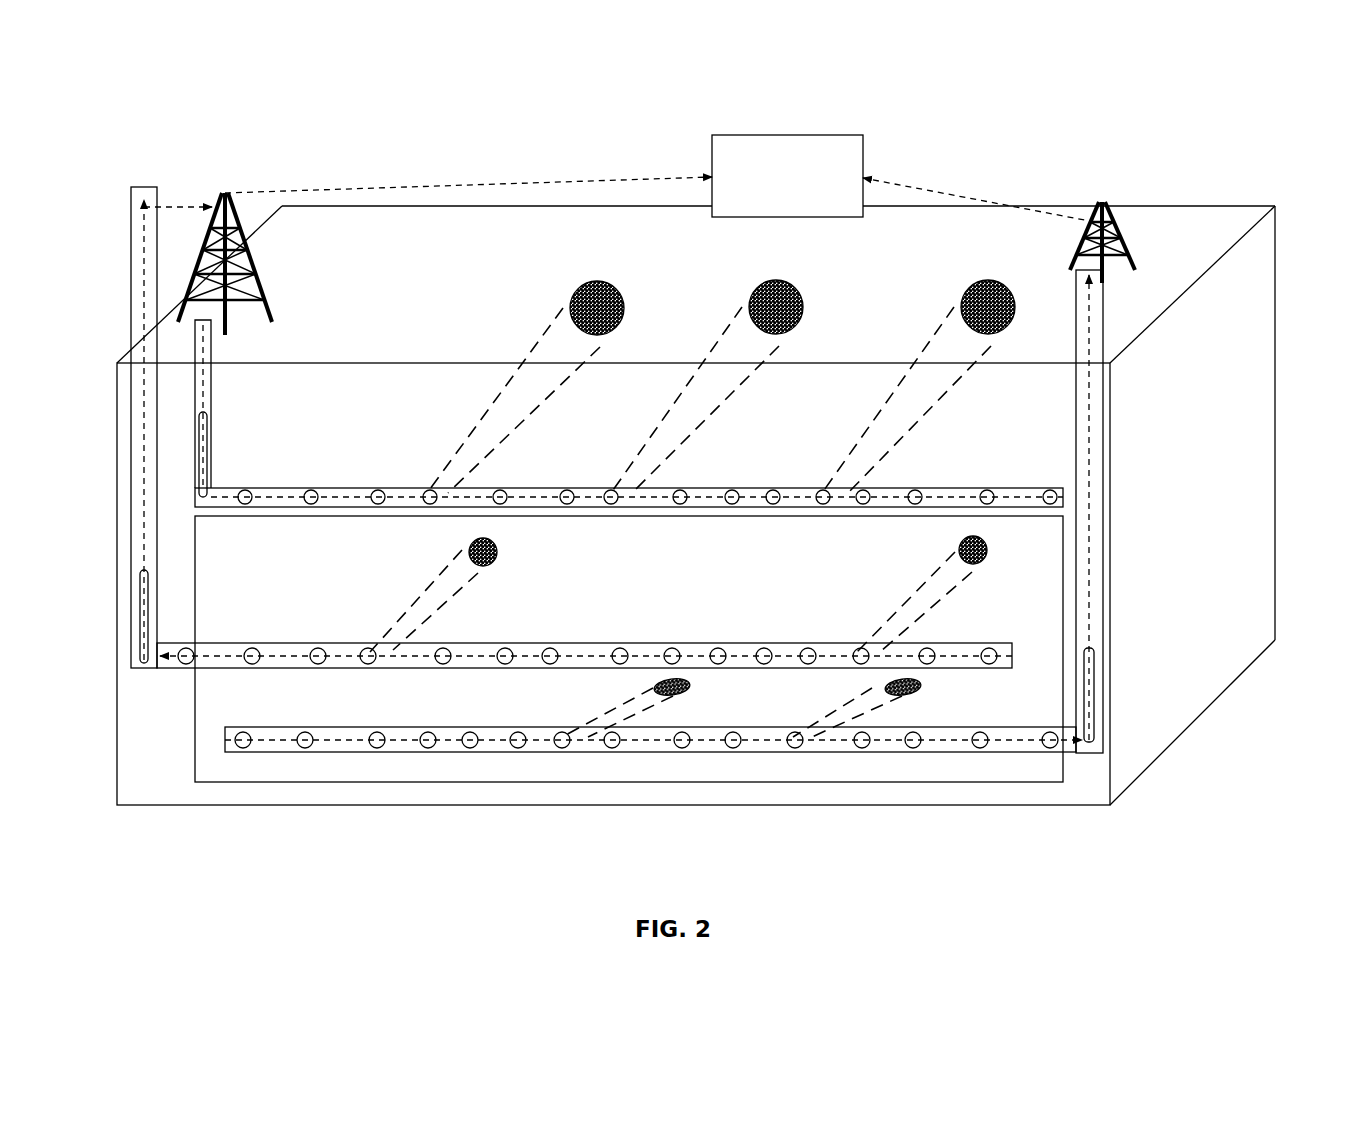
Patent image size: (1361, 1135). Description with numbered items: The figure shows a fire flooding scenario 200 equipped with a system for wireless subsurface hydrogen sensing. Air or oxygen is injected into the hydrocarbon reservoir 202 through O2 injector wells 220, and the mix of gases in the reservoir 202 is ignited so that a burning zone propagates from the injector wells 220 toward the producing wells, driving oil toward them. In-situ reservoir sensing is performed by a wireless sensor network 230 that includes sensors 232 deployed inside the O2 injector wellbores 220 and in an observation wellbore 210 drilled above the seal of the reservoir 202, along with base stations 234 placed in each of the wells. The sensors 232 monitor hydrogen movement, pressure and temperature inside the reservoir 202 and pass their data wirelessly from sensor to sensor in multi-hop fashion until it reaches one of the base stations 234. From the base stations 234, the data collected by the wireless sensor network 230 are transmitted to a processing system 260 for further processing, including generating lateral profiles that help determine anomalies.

The fire flooding scenario 200 is at (1070, 188).
The hydrocarbon reservoir 202 is at (629, 649).
The observation wellbore 210 is at (339, 393).
The O2 injector well 220 is at (1180, 322).
The wireless sensor network 230 is at (992, 473).
The sensor 232 is at (497, 565).
The base station 234 is at (207, 440).
The processing system 260 is at (778, 135).